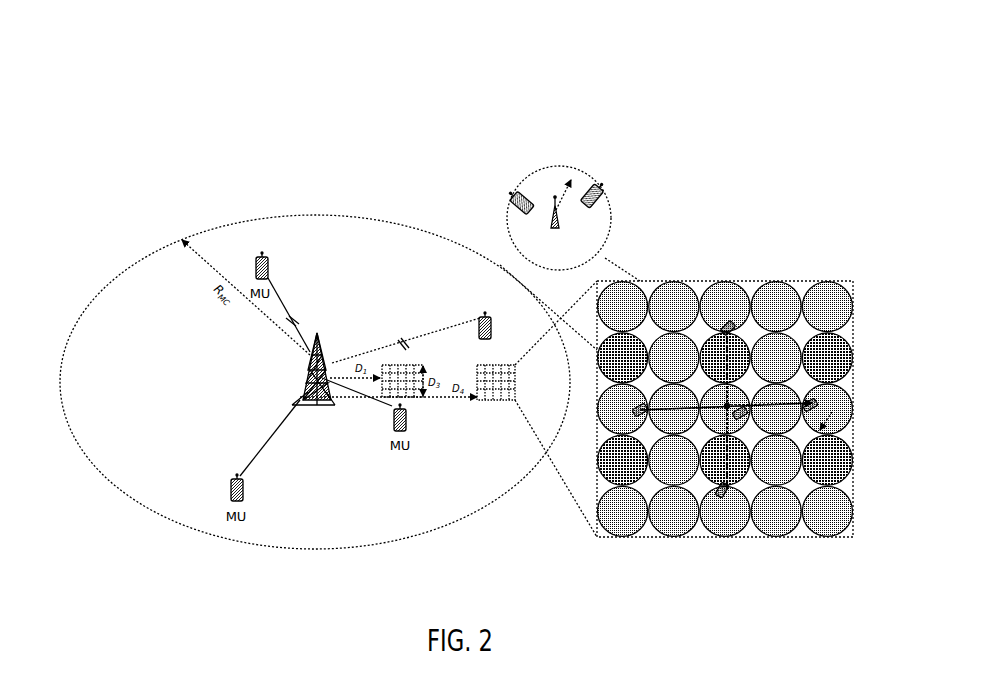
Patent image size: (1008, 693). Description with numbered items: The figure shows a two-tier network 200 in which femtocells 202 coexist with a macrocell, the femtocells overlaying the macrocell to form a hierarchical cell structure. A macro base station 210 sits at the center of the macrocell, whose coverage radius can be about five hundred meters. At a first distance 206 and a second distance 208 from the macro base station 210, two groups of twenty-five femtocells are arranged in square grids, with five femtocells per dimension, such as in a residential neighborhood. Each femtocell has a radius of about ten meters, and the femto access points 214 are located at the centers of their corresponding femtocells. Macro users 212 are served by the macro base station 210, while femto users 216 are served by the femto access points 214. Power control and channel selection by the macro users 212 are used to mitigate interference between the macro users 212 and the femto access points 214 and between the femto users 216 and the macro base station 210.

The two-tier network 200 is at (704, 71).
The femtocells 202 is at (814, 270).
The distance D1 206 is at (366, 357).
The distance D2 208 is at (462, 395).
The MBS 210 is at (306, 438).
The MUs 212 is at (480, 318).
The FAPs 214 is at (575, 245).
The FUs 216 is at (590, 188).